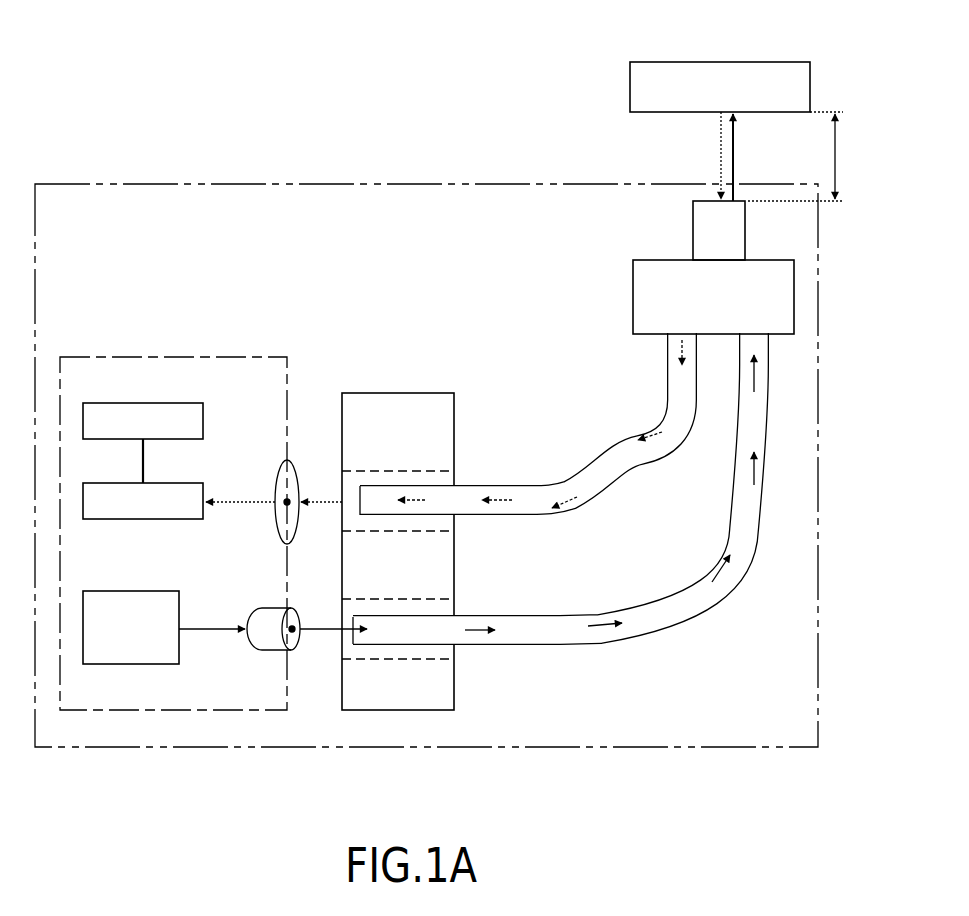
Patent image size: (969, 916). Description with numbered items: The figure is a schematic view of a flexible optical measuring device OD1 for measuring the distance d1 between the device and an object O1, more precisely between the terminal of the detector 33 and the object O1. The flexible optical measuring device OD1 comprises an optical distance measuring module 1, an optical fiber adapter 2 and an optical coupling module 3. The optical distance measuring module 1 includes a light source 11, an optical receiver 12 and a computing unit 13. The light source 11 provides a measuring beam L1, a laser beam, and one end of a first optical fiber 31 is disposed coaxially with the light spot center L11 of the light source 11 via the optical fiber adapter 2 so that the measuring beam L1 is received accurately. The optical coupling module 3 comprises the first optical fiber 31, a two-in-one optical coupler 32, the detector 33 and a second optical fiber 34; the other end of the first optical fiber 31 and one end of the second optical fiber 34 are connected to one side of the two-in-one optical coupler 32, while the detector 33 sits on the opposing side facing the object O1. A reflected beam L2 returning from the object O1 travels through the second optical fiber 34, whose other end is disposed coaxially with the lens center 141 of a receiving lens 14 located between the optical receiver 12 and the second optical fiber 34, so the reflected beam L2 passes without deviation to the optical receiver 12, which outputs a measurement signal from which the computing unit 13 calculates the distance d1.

The flexible optical measuring device OD1 is at (158, 85).
The object O1 is at (715, 62).
The distance d1 is at (805, 156).
The measuring beam L1 is at (601, 626).
The reflected beam L2 is at (496, 500).
The optical distance measuring module 1 is at (108, 357).
The light source 11 is at (145, 591).
The optical receiver 12 is at (119, 483).
The computing unit 13 is at (174, 403).
The receiving lens 14 is at (299, 476).
The lens center 141 is at (289, 504).
The light spot center L11 is at (293, 633).
The optical fiber adapter 2 is at (392, 393).
The optical coupling module 3 is at (573, 451).
The first optical fiber 31 is at (537, 638).
The two-in-one optical coupler 32 is at (650, 293).
The detector 33 is at (715, 231).
The second optical fiber 34 is at (598, 466).